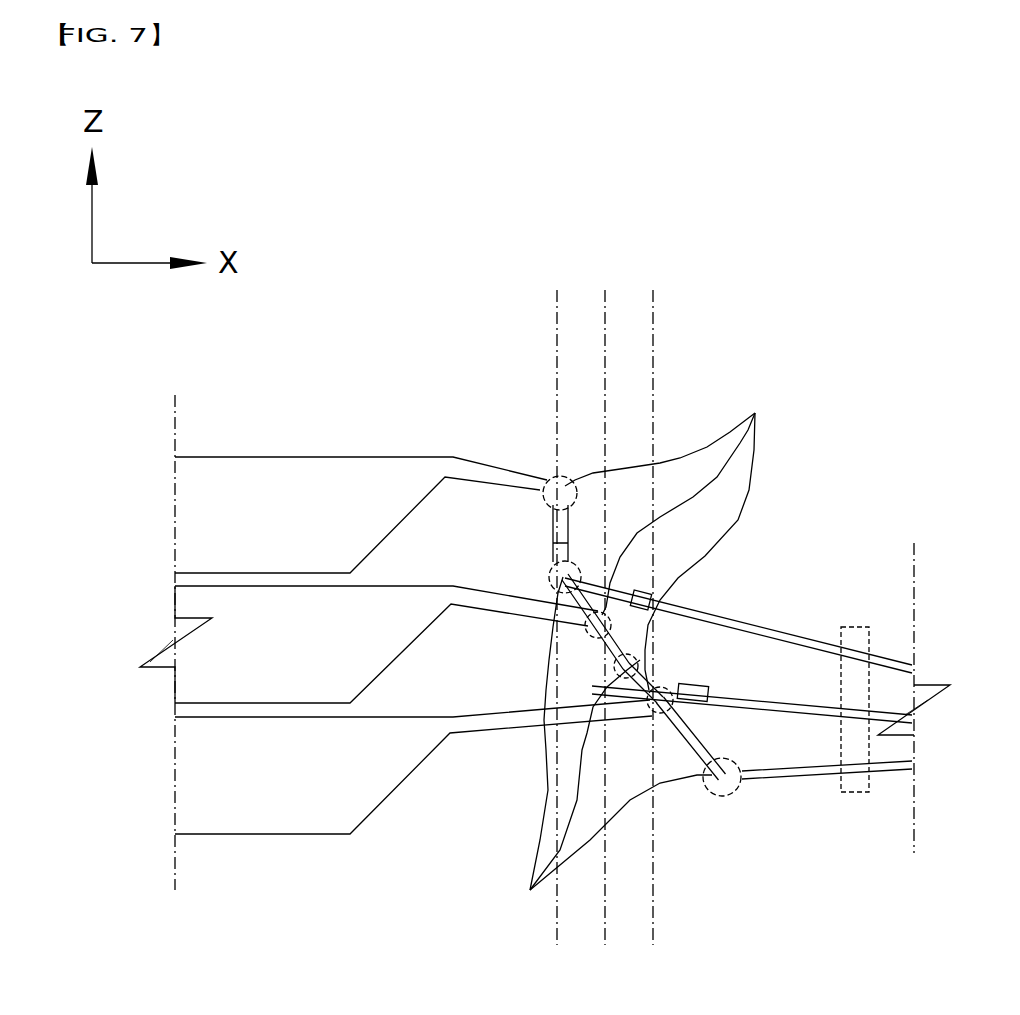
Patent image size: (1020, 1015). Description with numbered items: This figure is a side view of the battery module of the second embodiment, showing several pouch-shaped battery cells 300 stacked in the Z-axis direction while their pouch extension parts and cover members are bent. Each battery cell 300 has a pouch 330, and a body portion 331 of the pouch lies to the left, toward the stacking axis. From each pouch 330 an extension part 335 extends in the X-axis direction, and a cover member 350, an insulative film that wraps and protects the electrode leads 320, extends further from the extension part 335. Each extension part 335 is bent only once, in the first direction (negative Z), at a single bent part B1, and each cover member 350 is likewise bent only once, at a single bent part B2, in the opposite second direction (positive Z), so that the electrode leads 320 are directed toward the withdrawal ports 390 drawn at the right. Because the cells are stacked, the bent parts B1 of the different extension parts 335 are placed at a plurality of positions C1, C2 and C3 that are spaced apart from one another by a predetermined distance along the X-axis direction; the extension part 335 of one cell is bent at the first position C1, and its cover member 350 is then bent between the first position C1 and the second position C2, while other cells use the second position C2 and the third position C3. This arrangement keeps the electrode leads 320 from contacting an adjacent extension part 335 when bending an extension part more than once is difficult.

The battery cell 300 is at (186, 520).
The pouch 330 is at (233, 434).
The blade body 331 is at (303, 485).
The extension part 335 is at (507, 487).
The electrode lead 320 is at (823, 645).
The cover member 350 is at (675, 708).
The withdrawal port 390 is at (858, 794).
The bent part B1 is at (669, 536).
The bent part B2 is at (603, 747).
The first position C1 is at (557, 603).
The second position C2 is at (605, 603).
The third position C3 is at (653, 603).